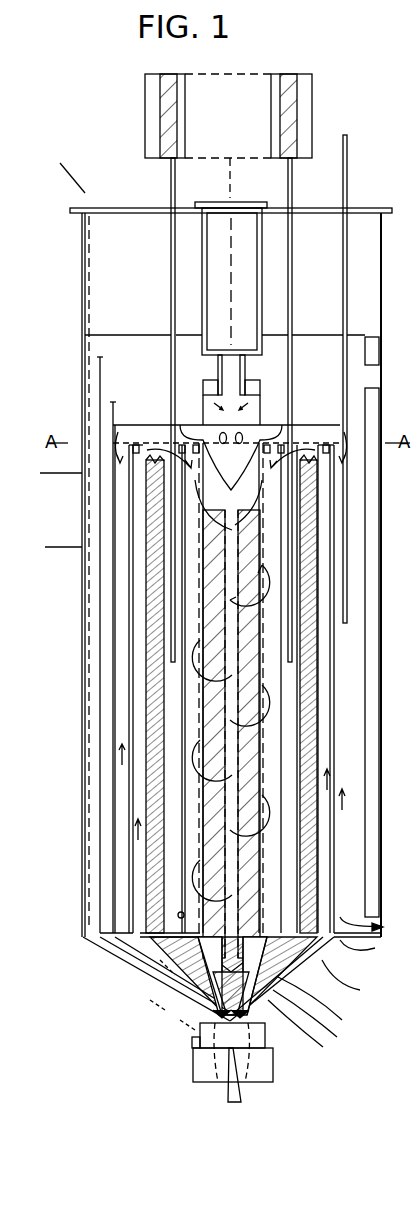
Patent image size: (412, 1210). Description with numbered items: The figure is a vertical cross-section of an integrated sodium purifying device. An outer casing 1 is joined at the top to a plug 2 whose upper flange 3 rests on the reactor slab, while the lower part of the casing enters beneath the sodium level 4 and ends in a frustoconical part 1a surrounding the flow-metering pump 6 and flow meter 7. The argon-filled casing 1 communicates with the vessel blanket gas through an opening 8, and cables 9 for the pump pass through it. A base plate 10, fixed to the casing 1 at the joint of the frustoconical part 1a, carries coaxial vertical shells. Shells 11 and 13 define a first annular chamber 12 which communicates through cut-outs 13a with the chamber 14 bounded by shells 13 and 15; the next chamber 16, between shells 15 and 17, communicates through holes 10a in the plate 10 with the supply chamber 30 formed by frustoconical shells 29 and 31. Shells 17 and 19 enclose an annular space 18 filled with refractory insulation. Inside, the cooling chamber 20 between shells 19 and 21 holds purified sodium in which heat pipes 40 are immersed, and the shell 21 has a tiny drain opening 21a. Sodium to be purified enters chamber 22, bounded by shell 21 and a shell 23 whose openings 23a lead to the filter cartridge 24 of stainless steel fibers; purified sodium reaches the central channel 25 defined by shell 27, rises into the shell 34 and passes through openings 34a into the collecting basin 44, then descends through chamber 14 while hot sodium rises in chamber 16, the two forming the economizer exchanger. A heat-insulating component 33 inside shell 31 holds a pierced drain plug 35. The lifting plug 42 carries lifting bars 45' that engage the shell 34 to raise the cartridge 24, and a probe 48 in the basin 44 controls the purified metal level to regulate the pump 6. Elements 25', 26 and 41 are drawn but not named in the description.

The outer casing 1 is at (82, 257).
The frustoconical part 1a is at (196, 1028).
The plug 2 is at (103, 238).
The upper flange 3 is at (107, 208).
The level 4 is at (63, 473).
The pump 6 is at (263, 1073).
The flow meter 7 is at (263, 1062).
The opening 8 is at (372, 384).
The cables 9 is at (85, 322).
The base plate 10 is at (355, 945).
The holes 10a is at (340, 968).
The shell 11 is at (100, 632).
The first annular chamber 12 is at (108, 670).
The shell 13 is at (115, 694).
The cut-outs 13a is at (127, 942).
The annular chamber 14 is at (122, 720).
The shell 15 is at (145, 752).
The annular chamber 16 is at (138, 782).
The shell 17 is at (147, 795).
The annular space 18 is at (155, 822).
The shell 19 is at (172, 835).
The annular chamber 20 is at (182, 853).
The shell 21 is at (187, 862).
The opening 21a is at (180, 968).
The chamber 22 is at (168, 958).
The shell 23 is at (205, 990).
The openings 23a is at (205, 615).
The filter cartridge 24 is at (200, 1045).
The channel 25 is at (351, 689).
The nozzle plug 25' is at (190, 999).
The return channel wall 26 is at (264, 908).
The shell 27 is at (270, 700).
The frustoconical shell 29 is at (308, 1032).
The supply chamber 30 is at (315, 1020).
The frustoconical shell 31 is at (321, 1004).
The heat-insulating component 33 is at (318, 980).
The shell 34 is at (262, 400).
The openings 34a is at (262, 445).
The plug 35 is at (260, 1013).
The heat pipes 40 is at (292, 187).
The drive block 41 is at (165, 100).
The plug for lifting the filter cartridge 42 is at (205, 250).
The collecting basin 44 is at (157, 425).
The lifting bars 45' is at (191, 352).
The probe 48 is at (347, 196).